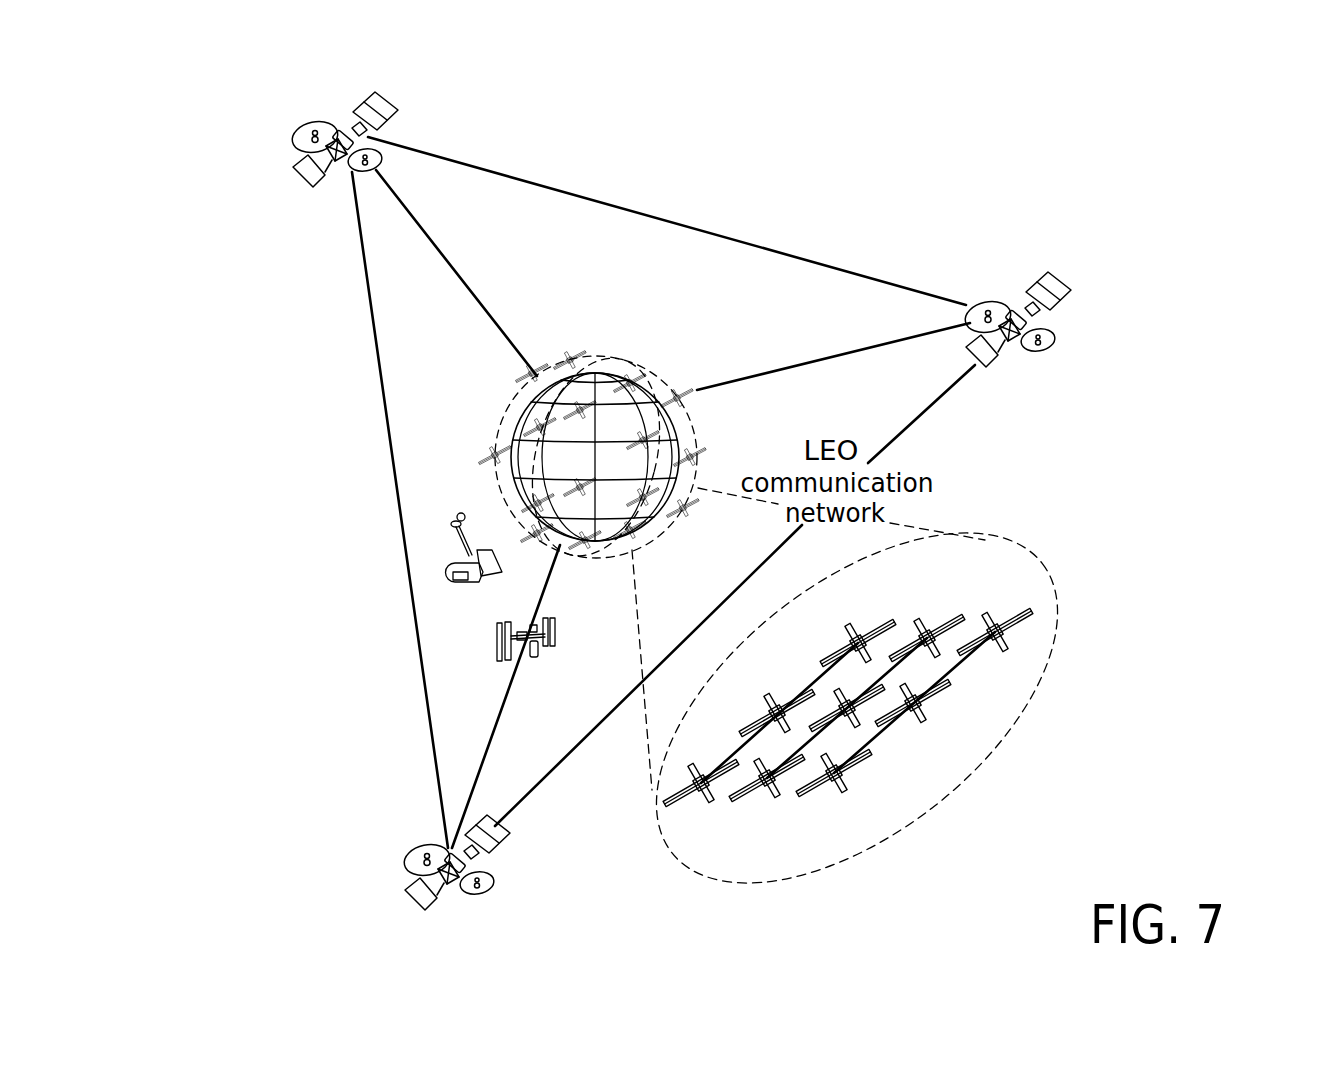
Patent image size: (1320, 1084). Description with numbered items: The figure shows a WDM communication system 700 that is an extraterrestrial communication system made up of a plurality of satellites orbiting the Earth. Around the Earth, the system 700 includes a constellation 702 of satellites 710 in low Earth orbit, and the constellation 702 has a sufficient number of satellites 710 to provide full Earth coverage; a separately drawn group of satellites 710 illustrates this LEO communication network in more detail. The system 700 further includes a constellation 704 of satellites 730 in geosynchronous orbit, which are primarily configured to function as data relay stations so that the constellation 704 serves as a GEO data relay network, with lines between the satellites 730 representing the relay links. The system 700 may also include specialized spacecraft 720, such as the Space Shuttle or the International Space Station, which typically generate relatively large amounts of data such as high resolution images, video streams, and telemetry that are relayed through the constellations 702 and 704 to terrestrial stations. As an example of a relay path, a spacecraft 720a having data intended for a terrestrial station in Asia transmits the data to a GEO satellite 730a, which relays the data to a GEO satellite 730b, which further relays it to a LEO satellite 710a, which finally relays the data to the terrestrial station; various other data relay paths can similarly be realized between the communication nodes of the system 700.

The WDM communication system 700 is at (231, 732).
The constellation of LEO satellites 702 is at (622, 338).
The constellation of GEO satellites 704 is at (332, 300).
The LEO satellite 710 is at (868, 630).
The LEO satellite 710a is at (683, 391).
The specialized spacecraft 720 is at (468, 580).
The spacecraft 720a is at (522, 618).
The GEO satellite 730 is at (403, 103).
The GEO satellite 730a is at (478, 892).
The GEO satellite 730b is at (1067, 284).